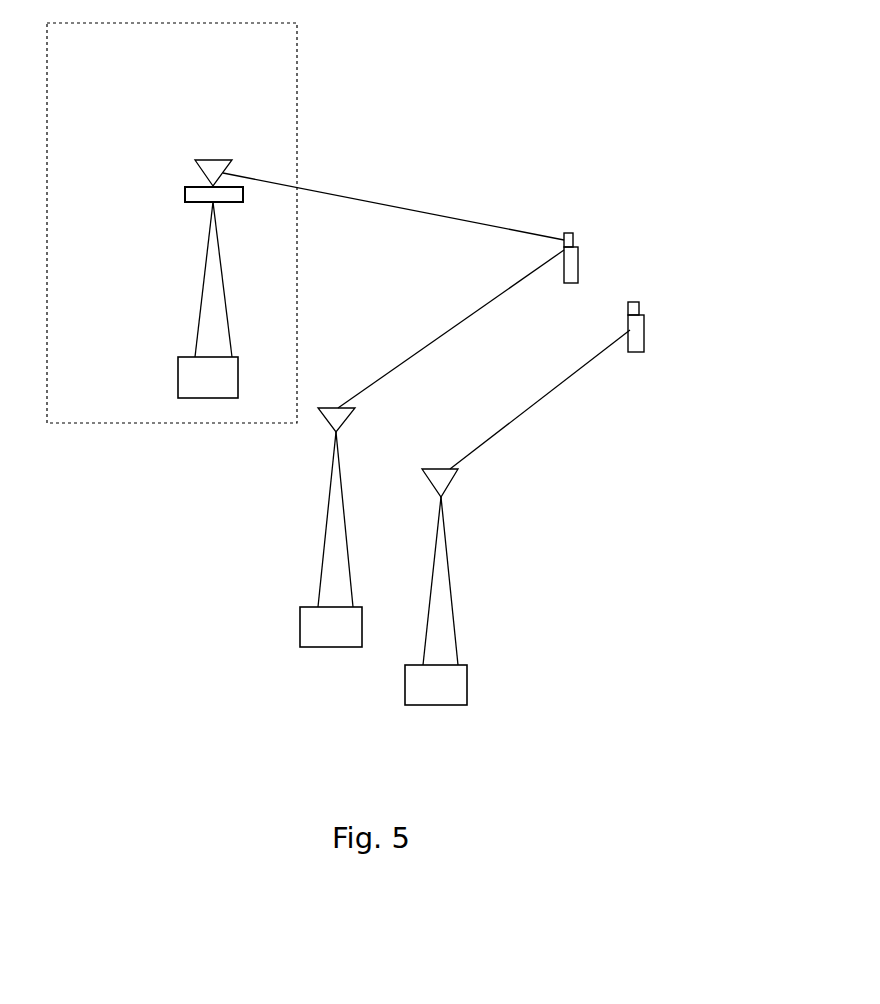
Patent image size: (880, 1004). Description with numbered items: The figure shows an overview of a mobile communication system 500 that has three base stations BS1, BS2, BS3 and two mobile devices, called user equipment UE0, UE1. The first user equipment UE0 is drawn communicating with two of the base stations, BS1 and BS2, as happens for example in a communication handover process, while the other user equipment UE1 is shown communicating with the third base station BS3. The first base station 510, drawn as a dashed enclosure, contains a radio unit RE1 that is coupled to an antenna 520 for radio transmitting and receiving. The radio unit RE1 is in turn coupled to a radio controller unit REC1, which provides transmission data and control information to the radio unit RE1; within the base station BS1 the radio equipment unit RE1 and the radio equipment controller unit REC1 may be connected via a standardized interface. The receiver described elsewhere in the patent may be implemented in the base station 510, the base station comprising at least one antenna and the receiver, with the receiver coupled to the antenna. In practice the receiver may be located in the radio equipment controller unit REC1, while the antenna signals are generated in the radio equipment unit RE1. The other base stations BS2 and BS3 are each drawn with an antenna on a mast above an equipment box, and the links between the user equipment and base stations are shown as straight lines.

The mobile communication system 500 is at (708, 120).
The first base station 510 is at (92, 423).
The antenna 520 is at (213, 160).
The radio unit RE1 is at (192, 134).
The first base station BS1 is at (213, 272).
The radio controller unit REC1 is at (178, 377).
The first user equipment UE0 is at (575, 270).
The user equipment UE1 is at (640, 338).
The second base station BS2 is at (335, 521).
The third base station BS3 is at (453, 590).